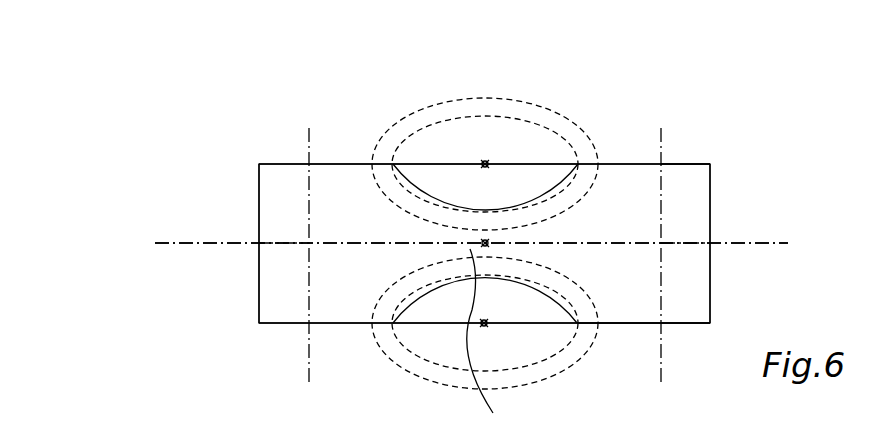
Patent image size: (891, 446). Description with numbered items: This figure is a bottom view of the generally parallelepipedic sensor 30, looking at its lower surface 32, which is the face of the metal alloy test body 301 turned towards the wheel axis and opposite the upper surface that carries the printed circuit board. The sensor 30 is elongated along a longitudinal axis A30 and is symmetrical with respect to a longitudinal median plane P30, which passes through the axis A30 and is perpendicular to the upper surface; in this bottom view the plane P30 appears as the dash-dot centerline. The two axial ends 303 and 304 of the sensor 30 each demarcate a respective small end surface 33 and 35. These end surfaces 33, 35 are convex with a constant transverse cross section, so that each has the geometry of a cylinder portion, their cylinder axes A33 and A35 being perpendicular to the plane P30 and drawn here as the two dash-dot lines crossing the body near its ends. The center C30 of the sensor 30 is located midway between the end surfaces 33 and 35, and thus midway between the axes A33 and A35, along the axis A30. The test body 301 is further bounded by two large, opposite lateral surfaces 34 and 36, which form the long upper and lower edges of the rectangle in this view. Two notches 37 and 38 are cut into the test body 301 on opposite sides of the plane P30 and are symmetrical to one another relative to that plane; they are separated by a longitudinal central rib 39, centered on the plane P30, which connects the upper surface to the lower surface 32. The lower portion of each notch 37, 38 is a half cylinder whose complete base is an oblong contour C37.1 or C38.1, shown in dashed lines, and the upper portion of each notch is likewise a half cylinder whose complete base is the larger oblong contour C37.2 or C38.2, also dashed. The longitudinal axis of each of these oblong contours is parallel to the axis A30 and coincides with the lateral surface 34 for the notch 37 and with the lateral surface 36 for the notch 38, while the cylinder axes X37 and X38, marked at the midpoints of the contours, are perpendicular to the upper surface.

The sensor 30 is at (442, 190).
The end surface 33 is at (257, 208).
The lateral surface 34 is at (330, 161).
The end surface 35 is at (712, 283).
The lateral surface 36 is at (303, 326).
The lower surface 32 is at (639, 278).
The notch 37 is at (538, 188).
The notch 38 is at (540, 309).
The longitudinal central rib 39 is at (493, 341).
The test body 301 is at (668, 197).
The axial end 303 is at (268, 260).
The axial end 304 is at (700, 226).
The longitudinal axis A30 is at (455, 232).
The longitudinal median plane P30 is at (471, 232).
The axis A33 is at (301, 245).
The axis A35 is at (674, 246).
The center C30 is at (506, 235).
The longitudinal axis X37 is at (503, 157).
The longitudinal axis X38 is at (501, 333).
The oblong contour C37.1 is at (465, 150).
The oblong contour C37.2 is at (485, 144).
The oblong contour C38.1 is at (465, 334).
The oblong contour C38.2 is at (485, 340).